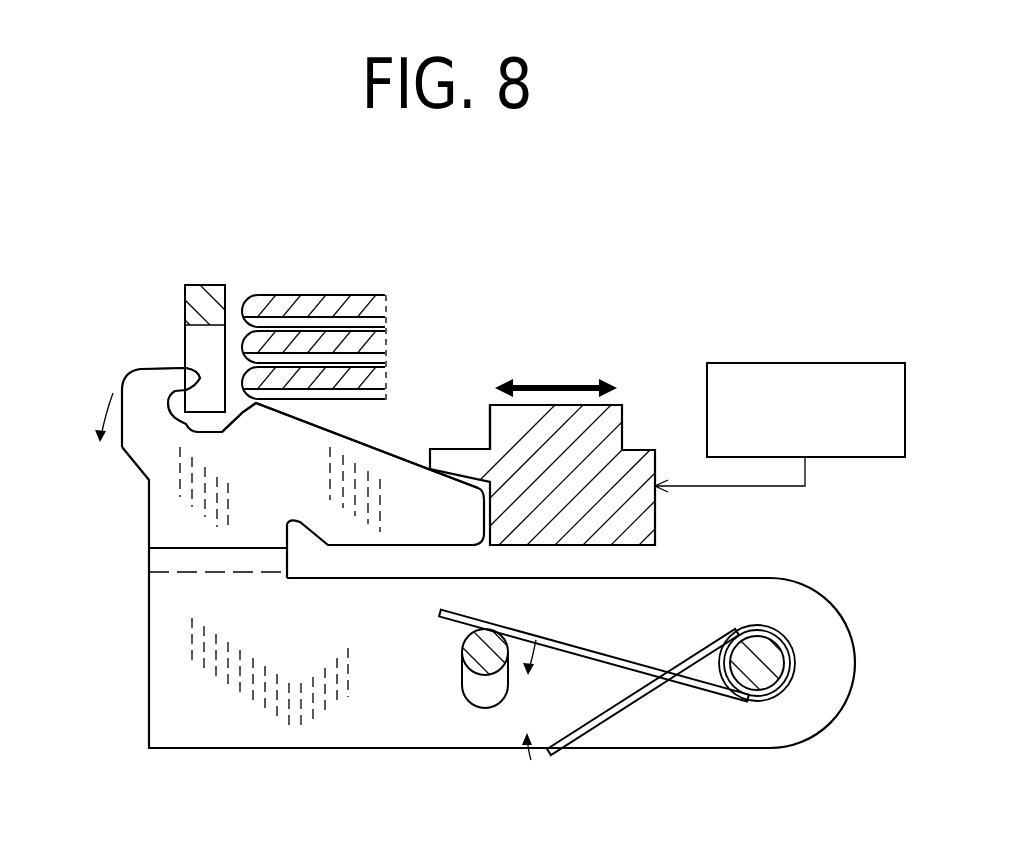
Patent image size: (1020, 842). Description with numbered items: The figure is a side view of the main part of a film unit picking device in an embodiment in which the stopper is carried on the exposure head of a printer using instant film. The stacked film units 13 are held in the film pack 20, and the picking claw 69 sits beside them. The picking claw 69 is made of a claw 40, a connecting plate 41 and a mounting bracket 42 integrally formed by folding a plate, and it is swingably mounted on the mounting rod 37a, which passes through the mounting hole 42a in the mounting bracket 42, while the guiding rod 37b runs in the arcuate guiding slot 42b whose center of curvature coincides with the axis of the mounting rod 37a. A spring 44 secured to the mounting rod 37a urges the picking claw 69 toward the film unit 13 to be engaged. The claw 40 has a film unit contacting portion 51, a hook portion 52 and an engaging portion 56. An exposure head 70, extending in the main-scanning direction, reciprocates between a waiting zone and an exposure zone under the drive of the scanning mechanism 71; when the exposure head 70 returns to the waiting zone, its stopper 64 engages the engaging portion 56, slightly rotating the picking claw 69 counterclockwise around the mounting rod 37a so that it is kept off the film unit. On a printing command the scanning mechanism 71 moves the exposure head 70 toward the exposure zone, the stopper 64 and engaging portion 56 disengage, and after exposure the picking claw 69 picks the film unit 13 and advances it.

The film unit 13 is at (380, 297).
The film pack 20 is at (213, 296).
The mounting rod 37a is at (757, 680).
The guiding rod 37b is at (463, 643).
The claw 40 is at (182, 510).
The connecting plate 41 is at (235, 560).
The mounting bracket 42 is at (188, 687).
The mounting hole 42a is at (757, 632).
The guiding slot 42b is at (480, 695).
The spring 44 is at (607, 717).
The film unit contacting portion 51 is at (262, 404).
The hook portion 52 is at (185, 380).
The engaging portion 56 is at (398, 478).
The stopper 64 is at (473, 455).
The picking claw 69 is at (352, 752).
The exposure head 70 is at (612, 416).
The scanning mechanism 71 is at (788, 370).